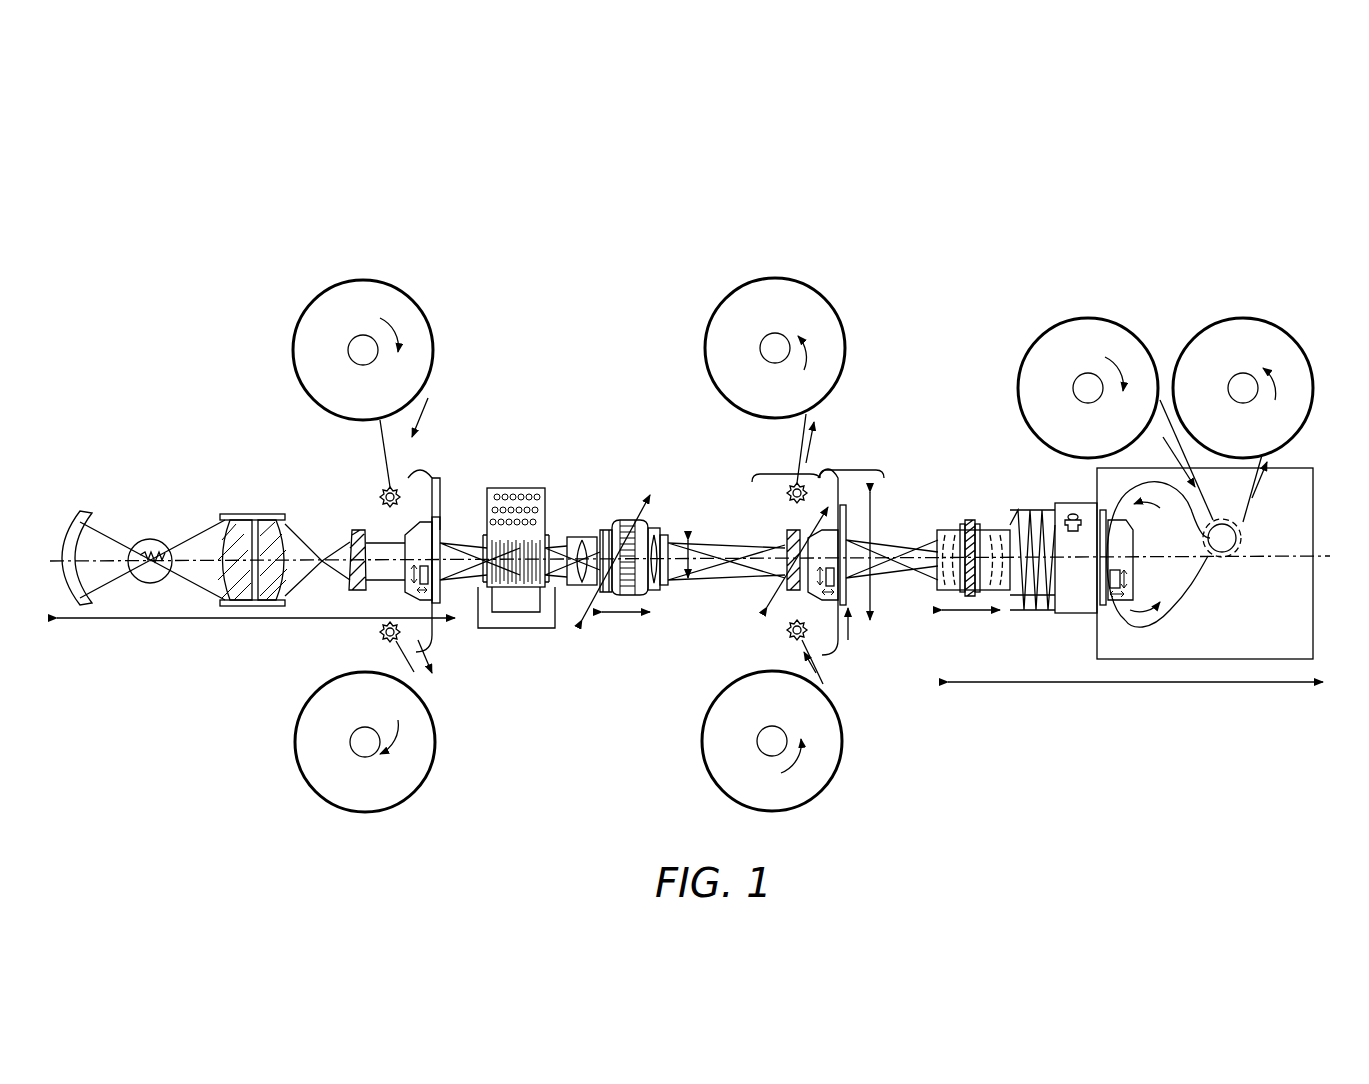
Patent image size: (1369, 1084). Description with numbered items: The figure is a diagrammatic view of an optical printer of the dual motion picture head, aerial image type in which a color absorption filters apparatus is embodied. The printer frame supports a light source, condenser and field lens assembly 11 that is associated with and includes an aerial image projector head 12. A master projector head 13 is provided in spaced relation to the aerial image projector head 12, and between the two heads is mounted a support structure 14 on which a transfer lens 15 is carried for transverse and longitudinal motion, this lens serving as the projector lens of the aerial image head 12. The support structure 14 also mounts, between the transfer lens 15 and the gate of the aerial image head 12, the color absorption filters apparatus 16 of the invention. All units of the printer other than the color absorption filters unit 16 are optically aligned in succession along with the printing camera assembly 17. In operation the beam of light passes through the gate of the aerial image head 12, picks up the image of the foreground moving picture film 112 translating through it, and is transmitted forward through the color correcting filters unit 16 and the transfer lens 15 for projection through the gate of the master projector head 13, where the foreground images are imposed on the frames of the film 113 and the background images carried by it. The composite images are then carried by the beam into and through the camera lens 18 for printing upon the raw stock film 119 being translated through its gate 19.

The light source, condenser and field lens assembly 11 is at (466, 478).
The aerial image projector head 12 is at (404, 592).
The master projector head 13 is at (806, 592).
The support structure 14 is at (470, 648).
The transfer lens 15 is at (620, 518).
The color absorption filters apparatus 16 is at (512, 485).
The printing camera assembly 17 is at (1086, 612).
The camera lens 18 is at (970, 525).
The gate 19 is at (1127, 605).
The foreground moving picture film 112 is at (428, 478).
The film 113 is at (832, 470).
The raw stock film 119 is at (1175, 620).